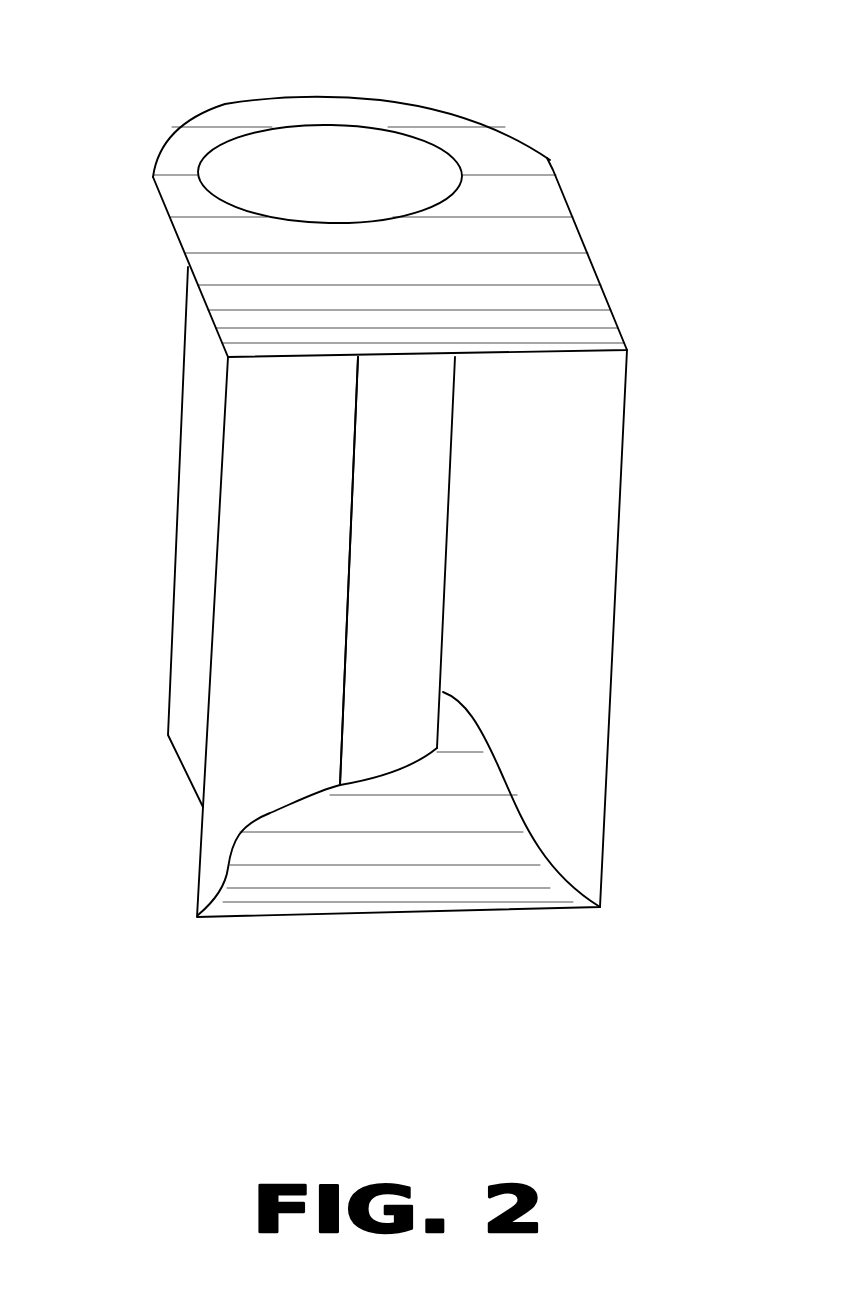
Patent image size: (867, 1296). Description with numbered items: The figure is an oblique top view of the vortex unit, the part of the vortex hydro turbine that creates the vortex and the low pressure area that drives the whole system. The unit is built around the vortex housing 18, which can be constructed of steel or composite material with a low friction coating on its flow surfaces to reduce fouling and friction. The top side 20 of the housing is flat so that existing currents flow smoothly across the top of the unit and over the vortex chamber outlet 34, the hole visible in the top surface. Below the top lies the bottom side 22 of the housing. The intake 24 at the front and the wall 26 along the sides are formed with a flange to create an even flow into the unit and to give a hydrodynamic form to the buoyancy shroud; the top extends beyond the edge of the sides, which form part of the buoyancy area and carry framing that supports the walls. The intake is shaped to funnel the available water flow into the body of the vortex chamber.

The vortex housing 18 is at (560, 197).
The top side 20 is at (183, 238).
The bottom side 22 is at (280, 878).
The intake 24 is at (603, 478).
The wall 26 is at (375, 592).
The vortex chamber outlet 34 is at (312, 158).